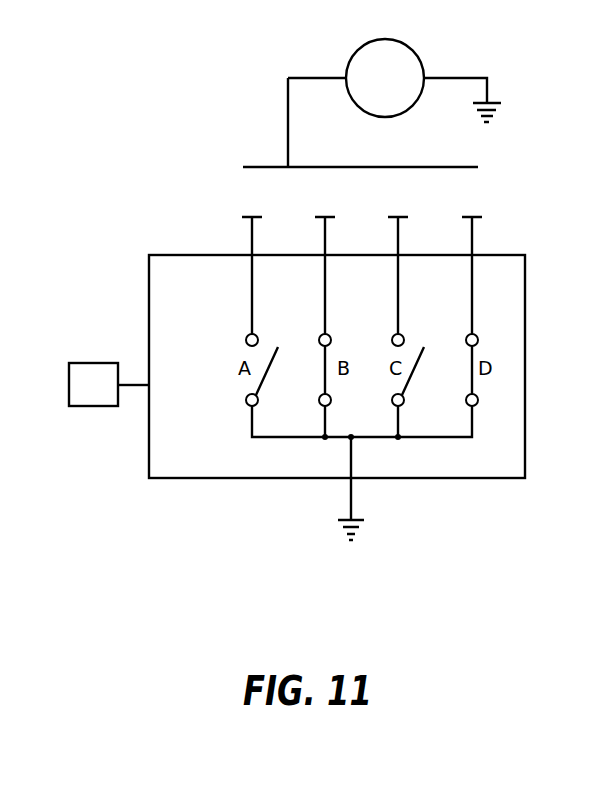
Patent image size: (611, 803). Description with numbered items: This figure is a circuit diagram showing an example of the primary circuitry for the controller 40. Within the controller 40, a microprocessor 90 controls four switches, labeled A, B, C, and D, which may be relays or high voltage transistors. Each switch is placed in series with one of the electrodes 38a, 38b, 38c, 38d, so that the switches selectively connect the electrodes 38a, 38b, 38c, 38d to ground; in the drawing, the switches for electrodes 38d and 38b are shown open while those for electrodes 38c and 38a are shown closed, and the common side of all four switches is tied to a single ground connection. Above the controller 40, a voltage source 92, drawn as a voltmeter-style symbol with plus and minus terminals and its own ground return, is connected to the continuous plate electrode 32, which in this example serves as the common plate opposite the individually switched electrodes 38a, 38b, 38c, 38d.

The voltage source 92 is at (352, 60).
The continuous plate electrode 32 is at (270, 167).
The controller 40 is at (148, 225).
The microprocessor 90 is at (92, 407).
The electrode 38d is at (248, 216).
The electrode 38c is at (321, 216).
The electrode 38b is at (394, 216).
The electrode 38a is at (468, 216).